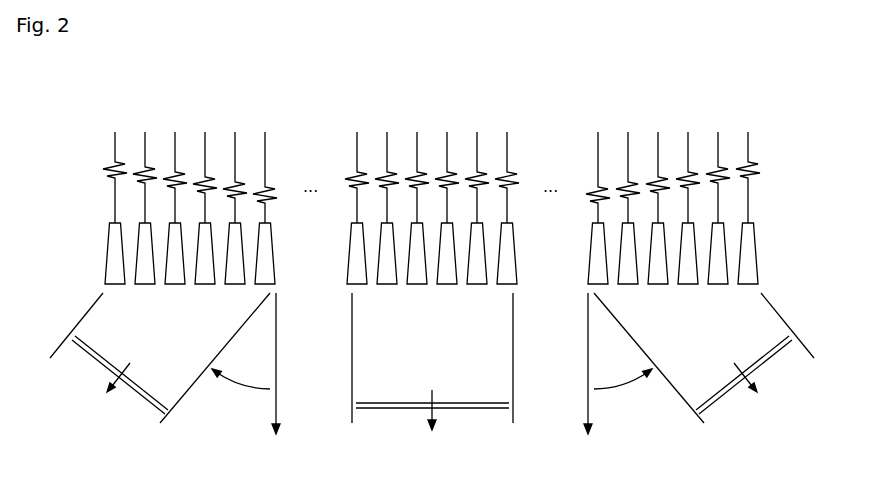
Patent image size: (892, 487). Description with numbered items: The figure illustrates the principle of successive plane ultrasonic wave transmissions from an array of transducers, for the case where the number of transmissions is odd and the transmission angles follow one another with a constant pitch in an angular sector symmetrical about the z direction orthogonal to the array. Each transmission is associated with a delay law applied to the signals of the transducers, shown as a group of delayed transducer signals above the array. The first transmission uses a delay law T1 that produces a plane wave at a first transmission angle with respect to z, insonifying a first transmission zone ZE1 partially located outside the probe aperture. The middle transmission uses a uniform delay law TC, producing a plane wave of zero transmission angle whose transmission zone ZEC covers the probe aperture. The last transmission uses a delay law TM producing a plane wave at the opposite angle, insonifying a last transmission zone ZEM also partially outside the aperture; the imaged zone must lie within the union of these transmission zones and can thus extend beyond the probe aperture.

The delay law T1 is at (190, 178).
The uniform delay law TC is at (432, 180).
The delay law TM is at (673, 178).
The first transmission zone ZE1 is at (165, 375).
The (M+1)/2-th transmission zone ZEC is at (432, 376).
The last transmission zone ZEM is at (697, 375).